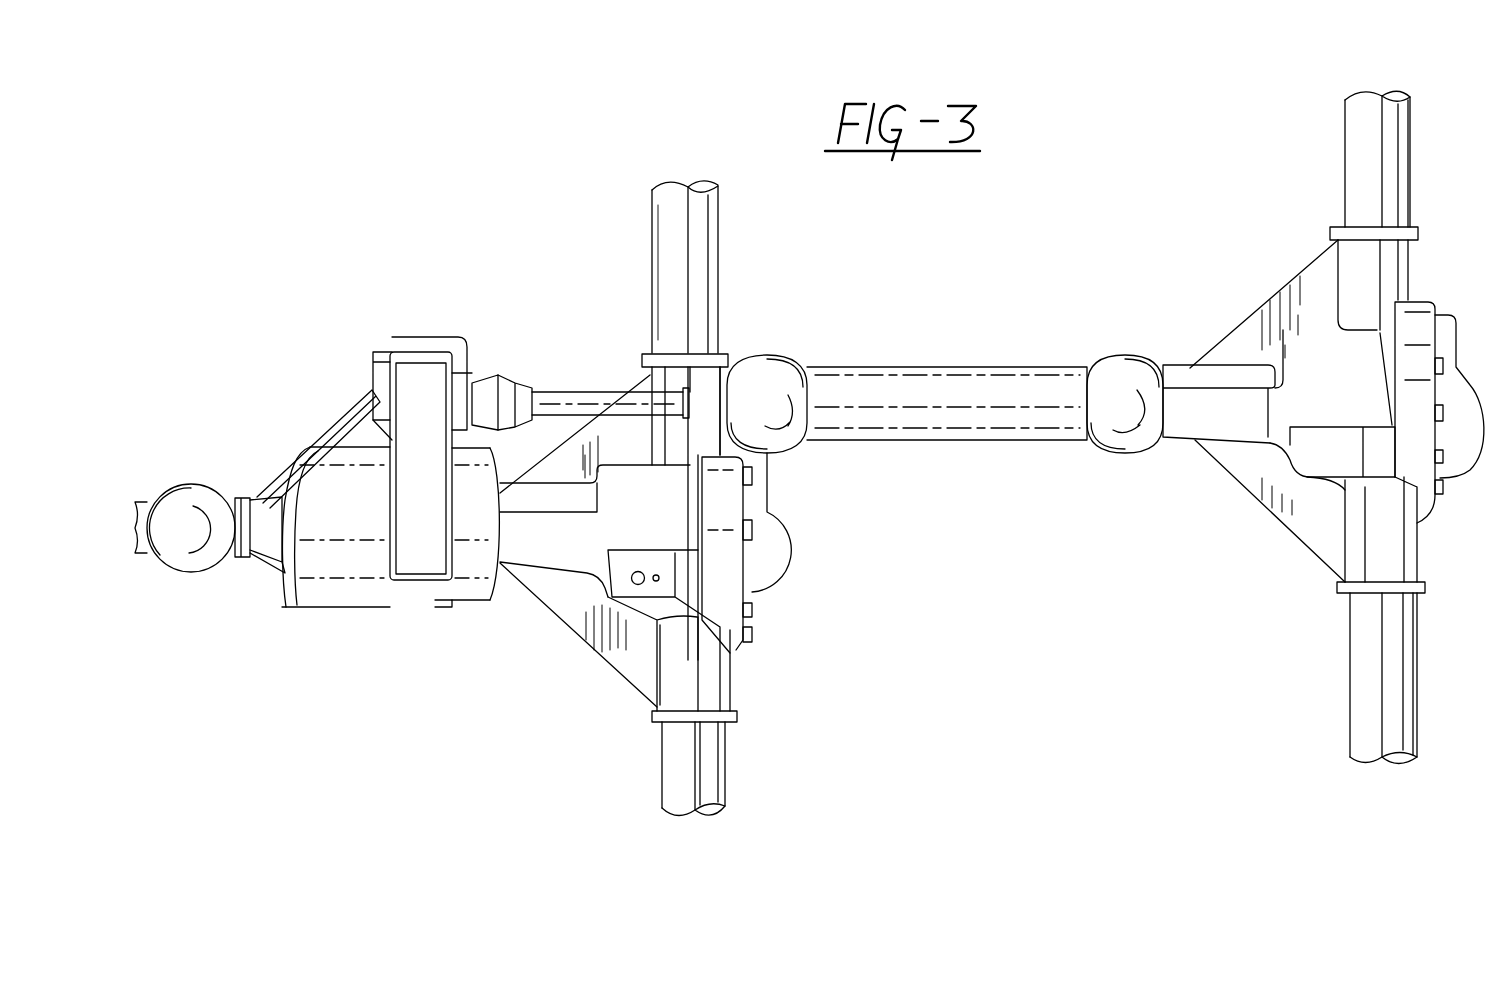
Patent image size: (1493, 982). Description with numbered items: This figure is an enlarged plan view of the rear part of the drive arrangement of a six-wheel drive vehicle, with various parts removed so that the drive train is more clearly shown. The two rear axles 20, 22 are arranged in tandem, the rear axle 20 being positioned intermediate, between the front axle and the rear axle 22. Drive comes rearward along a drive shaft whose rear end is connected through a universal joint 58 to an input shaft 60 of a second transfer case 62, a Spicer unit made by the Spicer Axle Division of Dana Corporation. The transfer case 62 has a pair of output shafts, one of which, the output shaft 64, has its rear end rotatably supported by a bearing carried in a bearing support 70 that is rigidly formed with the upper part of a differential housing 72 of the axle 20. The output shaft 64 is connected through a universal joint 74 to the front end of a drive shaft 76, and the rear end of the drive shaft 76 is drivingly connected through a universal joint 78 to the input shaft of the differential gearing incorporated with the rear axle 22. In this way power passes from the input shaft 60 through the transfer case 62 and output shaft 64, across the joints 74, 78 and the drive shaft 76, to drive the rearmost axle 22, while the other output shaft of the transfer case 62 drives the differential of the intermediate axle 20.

The rear axle 20 is at (662, 783).
The rear axle 22 is at (1350, 675).
The universal joint 58 is at (197, 570).
The input shaft 60 is at (238, 496).
The second transfer case 62 is at (357, 607).
The output shaft 64 is at (573, 400).
The bearing support 70 is at (706, 383).
The differential housing 72 is at (592, 627).
The universal joint 74 is at (778, 372).
The drive shaft 76 is at (987, 387).
The universal joint 78 is at (1127, 378).